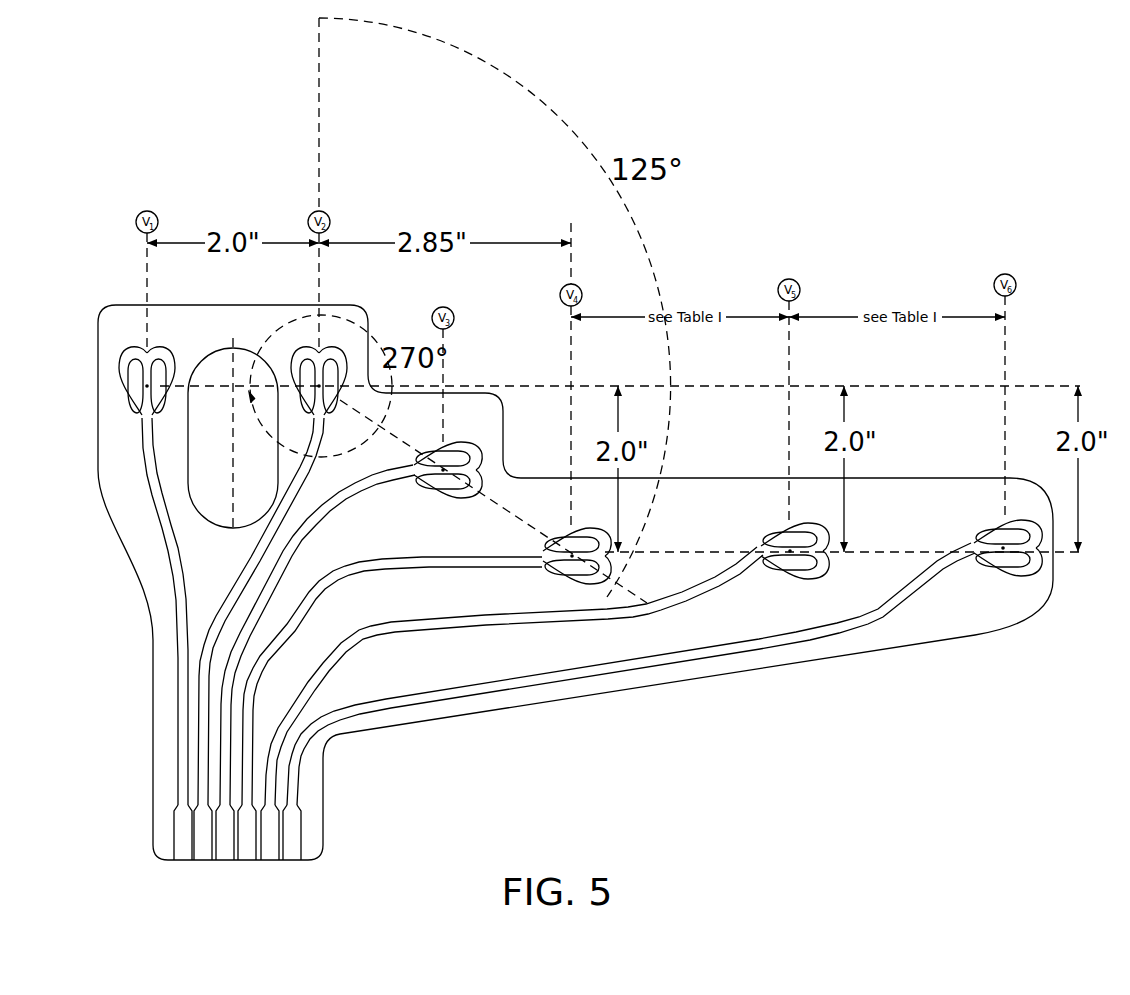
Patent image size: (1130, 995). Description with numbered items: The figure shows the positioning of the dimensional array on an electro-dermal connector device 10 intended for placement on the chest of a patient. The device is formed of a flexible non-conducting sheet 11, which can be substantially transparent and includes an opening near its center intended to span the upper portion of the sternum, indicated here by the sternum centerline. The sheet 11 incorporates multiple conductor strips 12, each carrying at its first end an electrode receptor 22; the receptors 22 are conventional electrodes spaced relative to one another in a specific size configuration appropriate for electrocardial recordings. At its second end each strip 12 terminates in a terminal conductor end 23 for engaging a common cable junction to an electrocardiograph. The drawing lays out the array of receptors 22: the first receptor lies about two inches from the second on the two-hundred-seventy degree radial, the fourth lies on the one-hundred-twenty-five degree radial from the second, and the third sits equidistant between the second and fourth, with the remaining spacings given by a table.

The electro-dermal connector device 10 is at (554, 706).
The flexible non-conducting sheet 11 is at (180, 305).
The conductor strips 12 is at (188, 603).
The electrode receptors 22 is at (345, 353).
The terminal conductor end 23 is at (270, 862).